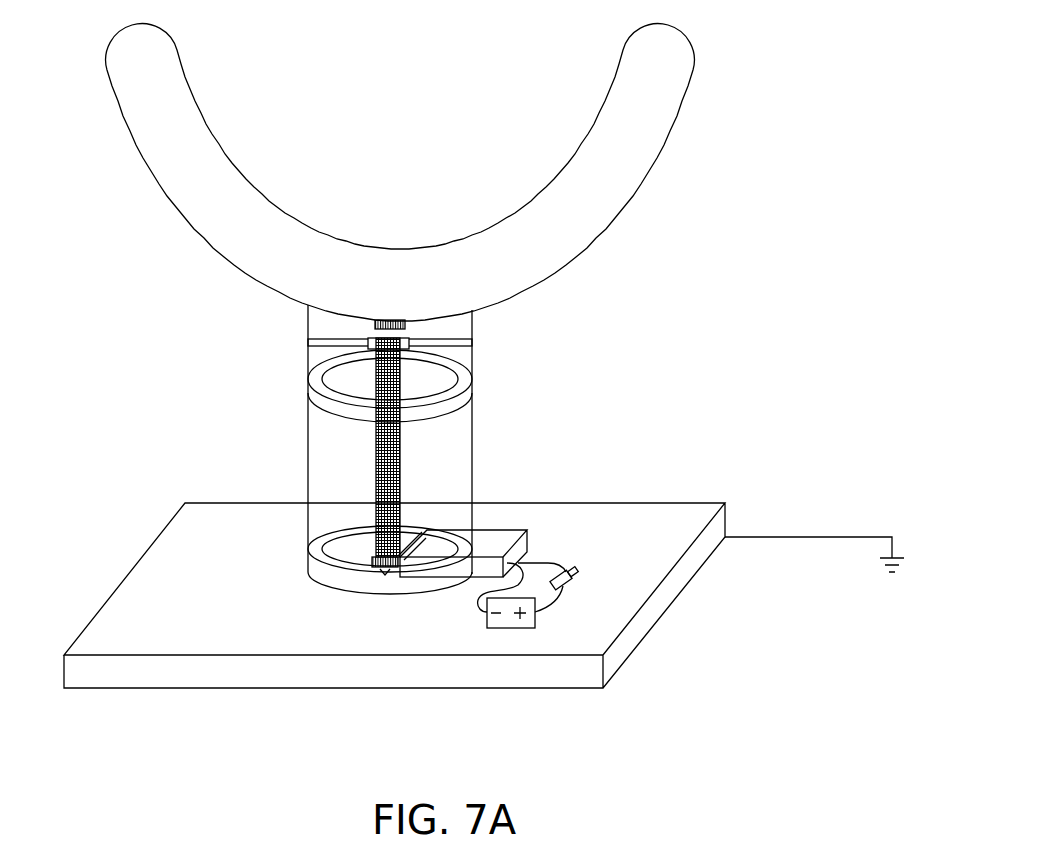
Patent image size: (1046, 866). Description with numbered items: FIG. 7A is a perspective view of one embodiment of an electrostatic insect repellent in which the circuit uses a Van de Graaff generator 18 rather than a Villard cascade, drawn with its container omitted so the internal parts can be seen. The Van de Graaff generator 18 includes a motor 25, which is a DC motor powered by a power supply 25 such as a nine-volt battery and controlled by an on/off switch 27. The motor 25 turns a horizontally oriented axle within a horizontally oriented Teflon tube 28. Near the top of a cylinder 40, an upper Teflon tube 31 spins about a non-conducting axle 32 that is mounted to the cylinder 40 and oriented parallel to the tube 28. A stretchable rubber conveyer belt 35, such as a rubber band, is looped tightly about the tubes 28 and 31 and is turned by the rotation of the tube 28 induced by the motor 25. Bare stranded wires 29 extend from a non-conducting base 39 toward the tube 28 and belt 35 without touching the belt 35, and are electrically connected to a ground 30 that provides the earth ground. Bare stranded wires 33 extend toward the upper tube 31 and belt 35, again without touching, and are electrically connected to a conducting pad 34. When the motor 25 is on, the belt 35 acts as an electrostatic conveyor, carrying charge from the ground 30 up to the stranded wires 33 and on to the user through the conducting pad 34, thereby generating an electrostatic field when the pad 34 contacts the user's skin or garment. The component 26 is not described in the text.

The Van de Graaff generator 18 is at (455, 172).
The conducting pad 34 is at (694, 127).
The stranded wires 33 is at (372, 324).
The upper Teflon tube 31 is at (414, 334).
The non-conducting axle 32 is at (456, 351).
The cylinder 40 is at (308, 423).
The stretchable rubber conveyer belt 35 is at (368, 456).
The Teflon tube 28 is at (408, 538).
The stranded wires 29 is at (382, 569).
The motor 25 is at (503, 528).
The on/off switch 27 is at (574, 566).
The battery 26 is at (504, 634).
The non-conducting base 39 is at (229, 605).
The ground 30 is at (858, 526).